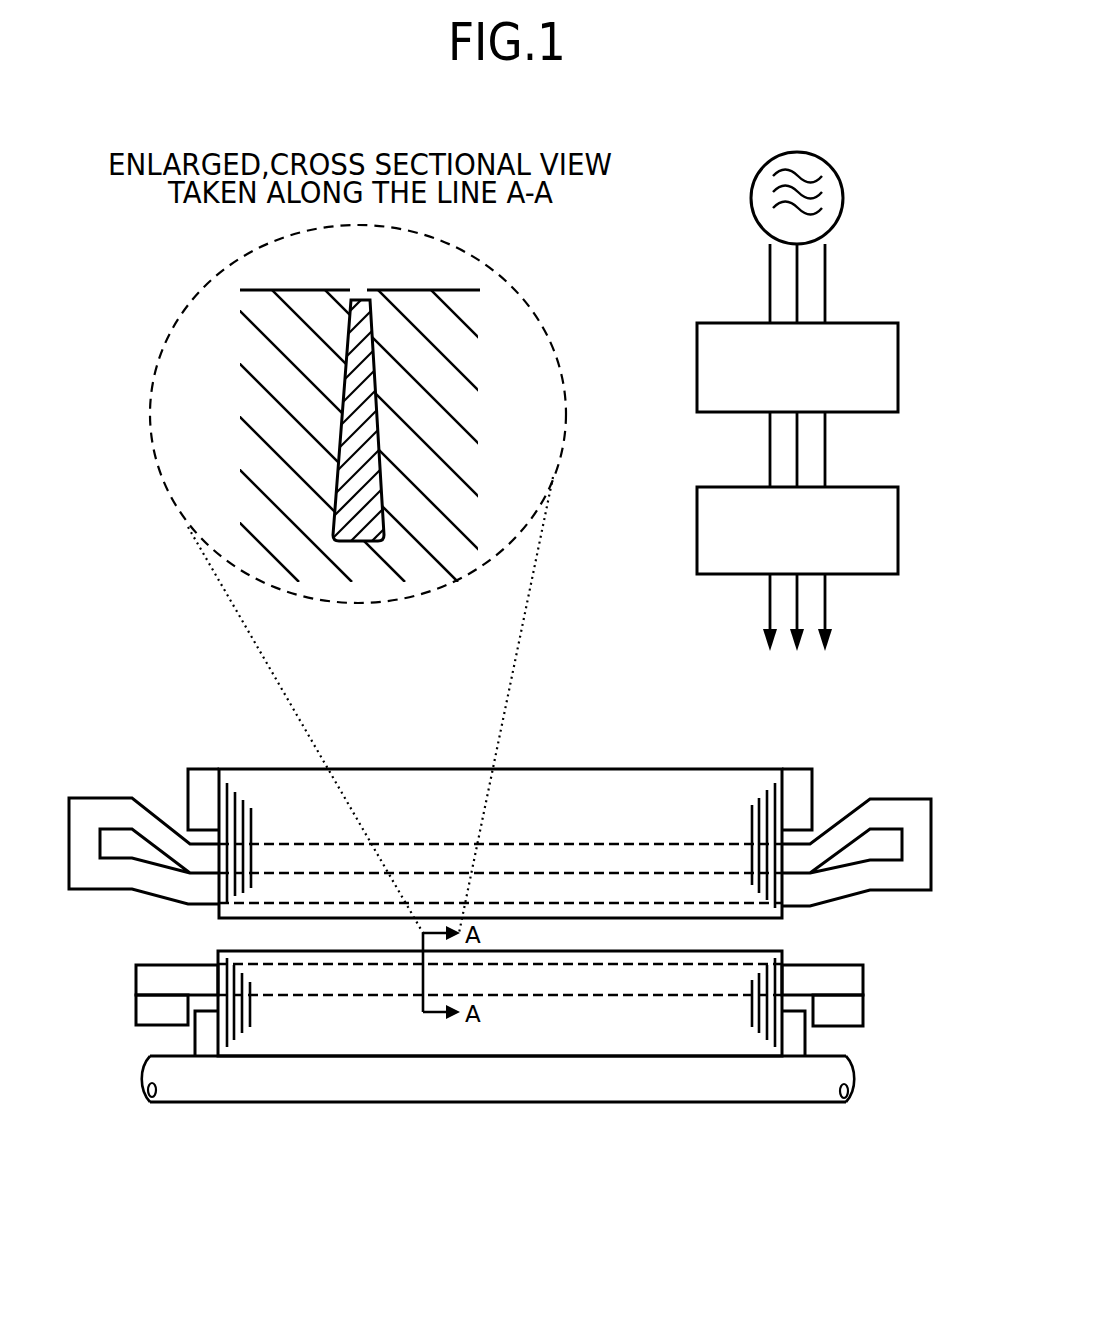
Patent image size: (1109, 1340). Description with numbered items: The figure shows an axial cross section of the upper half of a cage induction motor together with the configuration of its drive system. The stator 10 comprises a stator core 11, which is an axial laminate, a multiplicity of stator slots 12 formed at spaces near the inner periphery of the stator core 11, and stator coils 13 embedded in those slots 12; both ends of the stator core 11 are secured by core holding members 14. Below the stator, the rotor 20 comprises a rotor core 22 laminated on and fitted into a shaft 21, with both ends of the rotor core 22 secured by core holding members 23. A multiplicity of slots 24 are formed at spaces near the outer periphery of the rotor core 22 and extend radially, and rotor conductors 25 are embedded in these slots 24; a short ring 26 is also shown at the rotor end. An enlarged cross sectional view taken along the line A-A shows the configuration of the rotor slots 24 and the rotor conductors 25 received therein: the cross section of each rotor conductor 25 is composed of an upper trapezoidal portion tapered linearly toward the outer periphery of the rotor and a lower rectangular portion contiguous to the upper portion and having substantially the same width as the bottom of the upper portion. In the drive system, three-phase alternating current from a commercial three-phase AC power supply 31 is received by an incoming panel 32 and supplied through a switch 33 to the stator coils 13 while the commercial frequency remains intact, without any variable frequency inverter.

The stator 10 is at (456, 782).
The stator core 11 is at (268, 787).
The stator slots 12 is at (592, 843).
The stator coils 13 is at (850, 833).
The core holding members 14 is at (205, 780).
The rotor 20 is at (542, 1114).
The shaft 21 is at (387, 1083).
The rotor core 22 is at (290, 337).
The core holding members 23 is at (203, 1050).
The rotor slots 24 is at (340, 404).
The rotor conductors 25 is at (335, 459).
The short ring 26 is at (857, 1012).
The commercial three-phase AC power supply 31 is at (843, 193).
The incoming panel 32 is at (899, 365).
The switch 33 is at (899, 528).